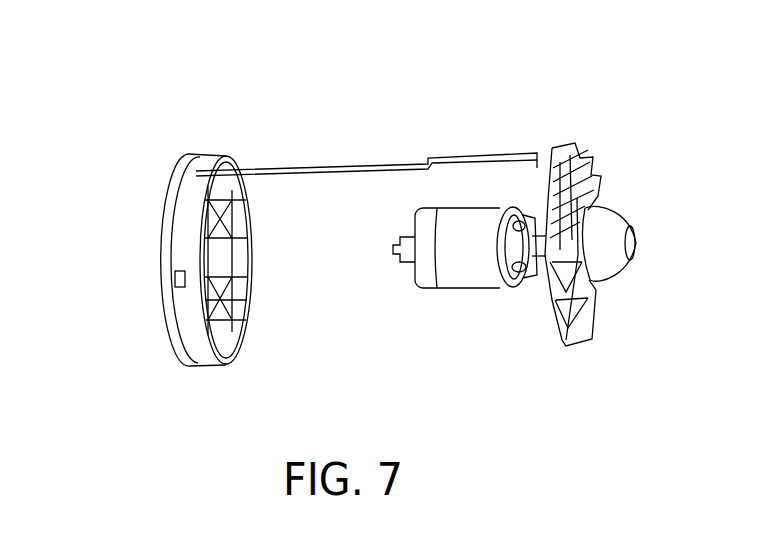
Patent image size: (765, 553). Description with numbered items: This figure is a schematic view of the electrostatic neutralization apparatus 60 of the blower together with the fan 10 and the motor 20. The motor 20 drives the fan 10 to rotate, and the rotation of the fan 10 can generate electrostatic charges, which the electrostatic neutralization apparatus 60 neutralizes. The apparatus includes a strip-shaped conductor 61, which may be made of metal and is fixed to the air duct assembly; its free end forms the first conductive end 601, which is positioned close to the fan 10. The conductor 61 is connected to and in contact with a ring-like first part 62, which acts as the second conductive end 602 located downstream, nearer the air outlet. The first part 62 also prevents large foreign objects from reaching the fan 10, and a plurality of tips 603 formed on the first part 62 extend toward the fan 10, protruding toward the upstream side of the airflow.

The electrostatic neutralization apparatus 60 is at (330, 118).
The conductor 61 is at (393, 162).
The first part 62 is at (206, 150).
The first conductive end 601 is at (545, 160).
The second conductive end 602 is at (158, 233).
The tips 603 is at (240, 234).
The motor 20 is at (463, 293).
The fan 10 is at (575, 348).